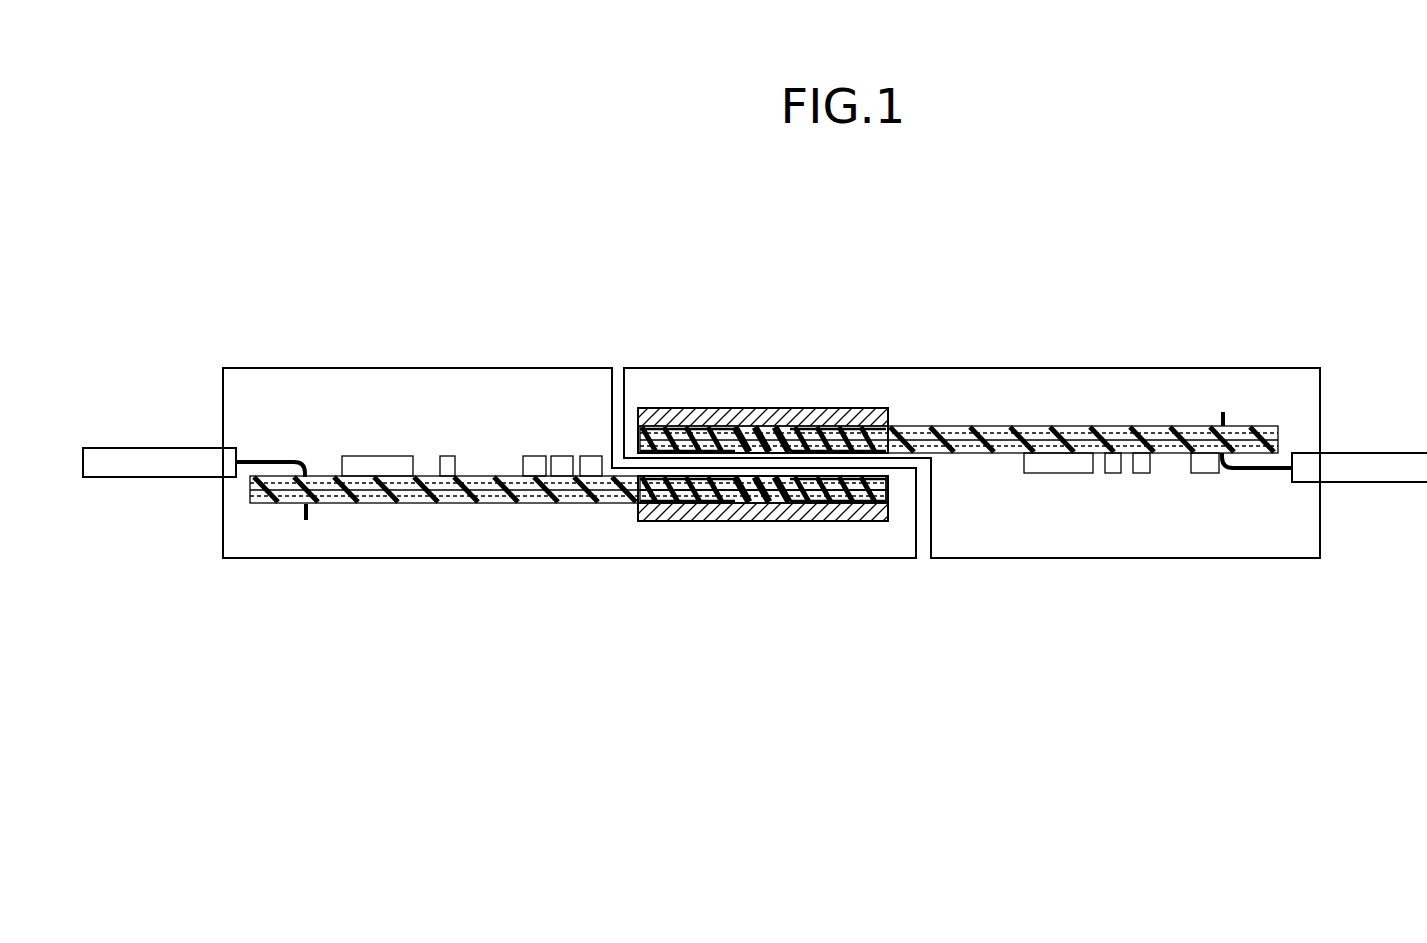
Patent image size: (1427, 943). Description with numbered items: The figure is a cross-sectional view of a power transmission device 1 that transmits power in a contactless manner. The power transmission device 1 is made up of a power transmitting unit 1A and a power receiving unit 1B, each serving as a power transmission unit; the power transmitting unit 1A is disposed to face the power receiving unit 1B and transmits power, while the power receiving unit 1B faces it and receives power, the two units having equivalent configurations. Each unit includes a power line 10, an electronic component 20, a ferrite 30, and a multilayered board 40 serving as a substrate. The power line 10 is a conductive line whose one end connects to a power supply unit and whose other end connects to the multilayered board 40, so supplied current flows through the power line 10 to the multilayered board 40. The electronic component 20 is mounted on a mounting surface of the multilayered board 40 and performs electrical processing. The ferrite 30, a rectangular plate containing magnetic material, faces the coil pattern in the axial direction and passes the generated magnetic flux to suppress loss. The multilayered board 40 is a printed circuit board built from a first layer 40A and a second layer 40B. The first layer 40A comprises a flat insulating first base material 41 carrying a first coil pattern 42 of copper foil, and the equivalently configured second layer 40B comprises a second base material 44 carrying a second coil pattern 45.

The power transmission device 1 is at (933, 279).
The power transmitting unit 1A is at (405, 366).
The power receiving unit 1B is at (908, 366).
The power line 10 is at (146, 447).
The electronic component 20 is at (450, 456).
The ferrite 30 is at (757, 407).
The multilayered board 40 is at (1161, 425).
The first layer 40A is at (903, 485).
The second layer 40B is at (903, 500).
The first base material 41 is at (694, 466).
The first coil pattern 42 is at (661, 440).
The second base material 44 is at (718, 492).
The second coil pattern 45 is at (661, 492).